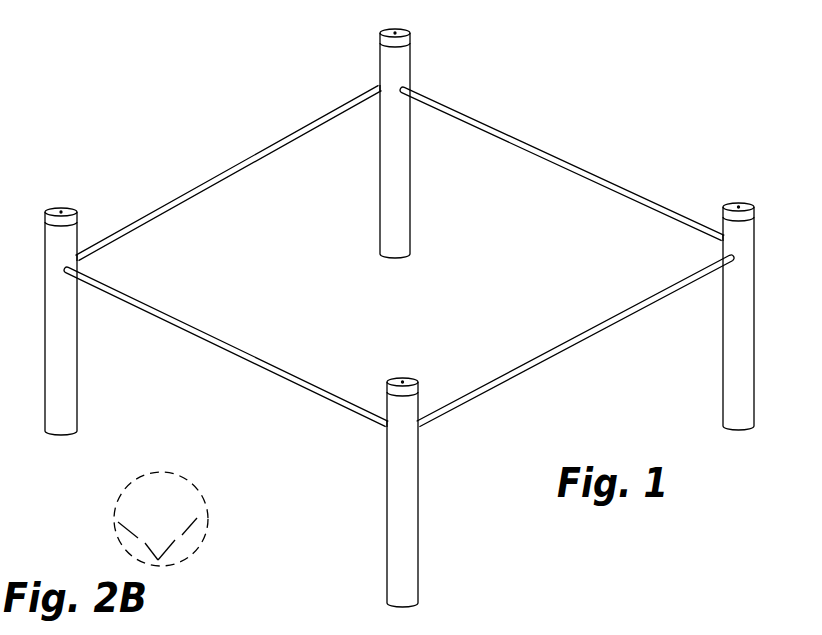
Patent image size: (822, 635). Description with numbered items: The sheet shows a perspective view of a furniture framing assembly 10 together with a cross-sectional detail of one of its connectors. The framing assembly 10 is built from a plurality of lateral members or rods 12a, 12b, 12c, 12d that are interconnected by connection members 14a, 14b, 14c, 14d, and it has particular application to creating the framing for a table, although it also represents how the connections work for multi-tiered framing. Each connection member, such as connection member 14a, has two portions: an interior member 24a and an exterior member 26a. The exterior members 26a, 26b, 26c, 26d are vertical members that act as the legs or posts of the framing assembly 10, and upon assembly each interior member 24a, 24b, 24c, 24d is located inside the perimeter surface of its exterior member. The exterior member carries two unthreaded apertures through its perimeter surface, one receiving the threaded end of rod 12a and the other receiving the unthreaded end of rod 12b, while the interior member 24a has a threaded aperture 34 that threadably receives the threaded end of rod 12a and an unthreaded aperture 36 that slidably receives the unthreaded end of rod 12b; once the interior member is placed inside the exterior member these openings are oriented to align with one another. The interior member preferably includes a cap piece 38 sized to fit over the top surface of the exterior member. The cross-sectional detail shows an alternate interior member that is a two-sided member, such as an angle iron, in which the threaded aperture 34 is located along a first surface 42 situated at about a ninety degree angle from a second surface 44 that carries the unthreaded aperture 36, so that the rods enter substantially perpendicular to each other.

In FIG. 1, the furniture framing assembly 10 is at (203, 88).
In FIG. 1, the rod 12a is at (229, 172).
In FIG. 1, the rod 12b is at (522, 140).
In FIG. 1, the rod 12c is at (538, 367).
In FIG. 1, the rod 12d is at (288, 385).
In FIG. 1, the connection member 14a is at (424, 72).
In FIG. 1, the connection member 14b is at (700, 310).
In FIG. 1, the connection member 14c is at (430, 472).
In FIG. 1, the connection member 14d is at (88, 333).
In FIG. 1, the interior member 24a is at (409, 27).
In FIG. 1, the interior member 24b is at (740, 198).
In FIG. 1, the interior member 24c is at (407, 373).
In FIG. 1, the interior member 24d is at (67, 203).
In FIG. 1, the exterior member 26a is at (384, 78).
In FIG. 1, the exterior member 26b is at (720, 227).
In FIG. 1, the exterior member 26c is at (390, 503).
In FIG. 1, the exterior member 26d is at (73, 235).
In FIG. 2B, the threaded aperture 34 is at (138, 540).
In FIG. 2B, the unthreaded aperture 36 is at (184, 538).
In FIG. 2B, the cap piece 38 is at (115, 503).
In FIG. 2B, the first surface 42 is at (145, 543).
In FIG. 2B, the second surface 44 is at (188, 524).